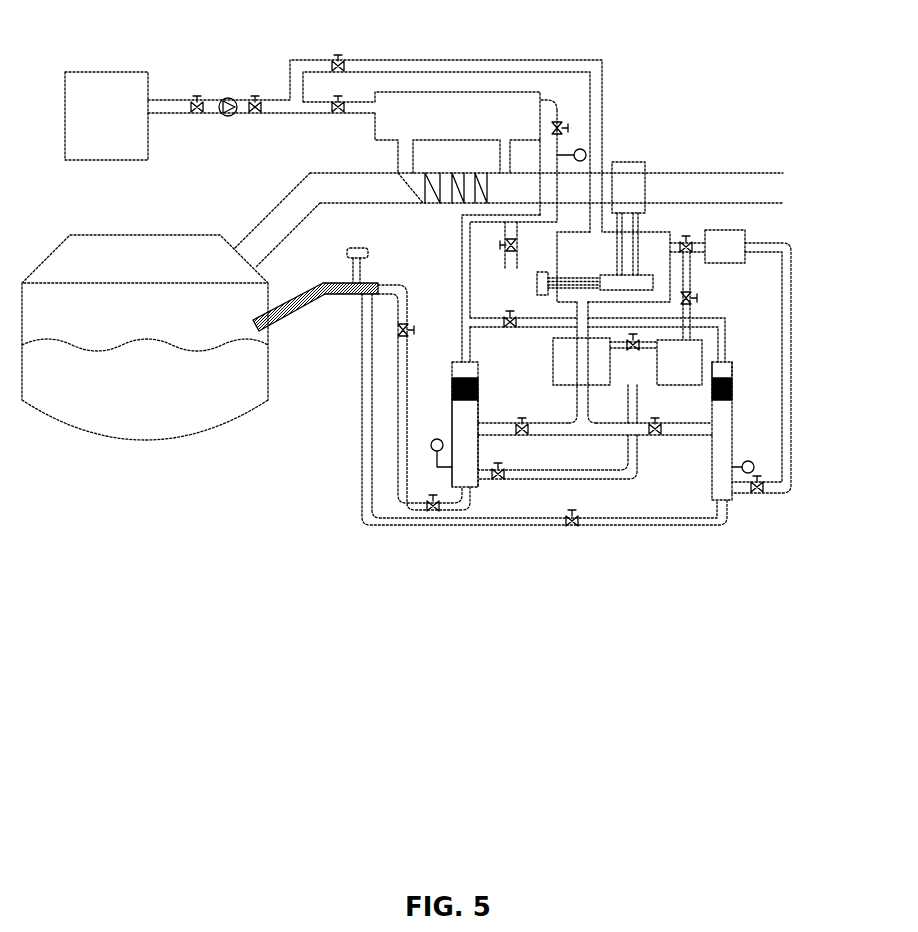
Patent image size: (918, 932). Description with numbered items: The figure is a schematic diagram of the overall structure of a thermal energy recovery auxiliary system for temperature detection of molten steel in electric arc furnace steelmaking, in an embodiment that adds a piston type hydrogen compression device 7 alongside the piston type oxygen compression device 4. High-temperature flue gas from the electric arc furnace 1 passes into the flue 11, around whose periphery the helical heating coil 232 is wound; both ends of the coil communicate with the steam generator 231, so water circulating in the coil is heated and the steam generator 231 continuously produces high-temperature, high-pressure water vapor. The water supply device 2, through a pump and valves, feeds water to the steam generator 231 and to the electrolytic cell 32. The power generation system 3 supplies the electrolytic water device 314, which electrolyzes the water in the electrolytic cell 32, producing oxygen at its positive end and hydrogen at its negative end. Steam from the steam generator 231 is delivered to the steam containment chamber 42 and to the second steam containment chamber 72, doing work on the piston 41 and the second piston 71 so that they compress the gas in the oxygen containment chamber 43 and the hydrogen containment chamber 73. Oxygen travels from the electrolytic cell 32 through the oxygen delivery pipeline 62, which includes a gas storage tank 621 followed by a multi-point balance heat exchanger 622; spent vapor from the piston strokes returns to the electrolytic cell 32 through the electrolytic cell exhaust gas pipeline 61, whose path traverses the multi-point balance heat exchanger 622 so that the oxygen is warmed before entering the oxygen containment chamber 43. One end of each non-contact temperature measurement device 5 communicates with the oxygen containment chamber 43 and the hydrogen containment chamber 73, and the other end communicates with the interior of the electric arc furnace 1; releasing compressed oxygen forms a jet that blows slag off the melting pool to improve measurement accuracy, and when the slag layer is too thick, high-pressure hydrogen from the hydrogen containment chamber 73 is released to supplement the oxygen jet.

The electric arc furnace 1 is at (176, 420).
The water supply device 2 is at (102, 95).
The power generation system 3 is at (665, 237).
The piston type oxygen compression device 4 is at (458, 418).
The non-contact temperature measurement device 5 is at (293, 290).
The flue 11 is at (693, 183).
The steam generator 231 is at (445, 107).
The helical heating coil 232 is at (472, 173).
The electrolytic water device 314 is at (687, 267).
The electrolytic cell 32 is at (672, 300).
The piston 41 is at (452, 412).
The steam containment chamber 42 is at (455, 370).
The oxygen containment chamber 43 is at (432, 462).
The electrolytic cell exhaust gas pipeline 61 is at (590, 380).
The oxygen delivery pipeline 62 is at (675, 385).
The gas storage tank 621 is at (638, 452).
The multi-point balance heat exchanger 622 is at (556, 378).
The piston type hydrogen compression device 7 is at (727, 410).
The second piston 71 is at (733, 395).
The second steam containment chamber 72 is at (732, 364).
The hydrogen containment chamber 73 is at (728, 443).